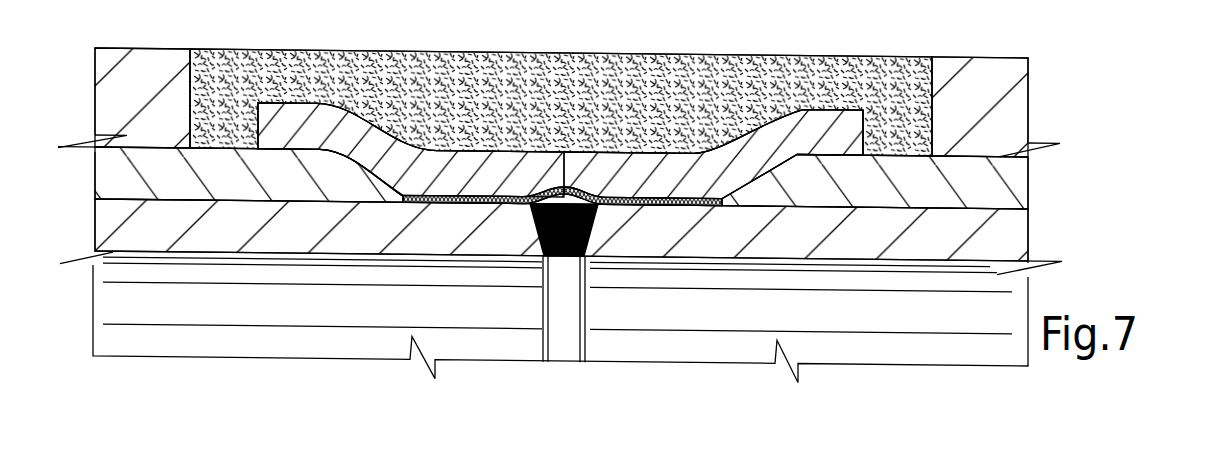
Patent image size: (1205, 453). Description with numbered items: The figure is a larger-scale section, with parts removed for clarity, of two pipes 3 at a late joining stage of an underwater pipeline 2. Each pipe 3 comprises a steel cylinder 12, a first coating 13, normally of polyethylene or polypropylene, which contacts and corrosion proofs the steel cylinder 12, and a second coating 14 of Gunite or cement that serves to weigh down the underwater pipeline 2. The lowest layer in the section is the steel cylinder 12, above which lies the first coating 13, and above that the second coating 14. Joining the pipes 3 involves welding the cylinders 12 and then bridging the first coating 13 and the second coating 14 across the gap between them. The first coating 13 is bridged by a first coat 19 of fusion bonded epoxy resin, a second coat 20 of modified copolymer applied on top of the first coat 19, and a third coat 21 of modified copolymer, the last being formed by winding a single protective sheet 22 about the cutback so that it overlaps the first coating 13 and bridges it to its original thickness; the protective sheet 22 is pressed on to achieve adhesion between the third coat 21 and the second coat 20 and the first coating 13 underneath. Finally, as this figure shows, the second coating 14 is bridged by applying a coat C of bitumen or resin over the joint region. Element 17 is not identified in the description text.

The underwater pipeline 2 is at (561, 164).
The pipe 3 is at (568, 79).
The steel cylinder 12 is at (257, 241).
The first coating 13 is at (105, 165).
The second coating 14 is at (137, 62).
The plug 17 is at (541, 258).
The first coat 19 is at (678, 203).
The second coat 20 is at (452, 203).
The third coat 21 is at (721, 162).
The protective sheet 22 is at (440, 162).
The coat C is at (528, 78).